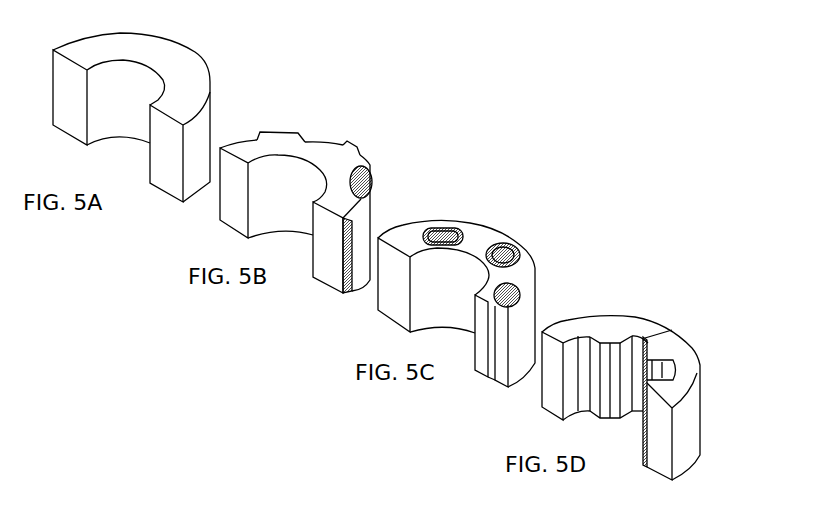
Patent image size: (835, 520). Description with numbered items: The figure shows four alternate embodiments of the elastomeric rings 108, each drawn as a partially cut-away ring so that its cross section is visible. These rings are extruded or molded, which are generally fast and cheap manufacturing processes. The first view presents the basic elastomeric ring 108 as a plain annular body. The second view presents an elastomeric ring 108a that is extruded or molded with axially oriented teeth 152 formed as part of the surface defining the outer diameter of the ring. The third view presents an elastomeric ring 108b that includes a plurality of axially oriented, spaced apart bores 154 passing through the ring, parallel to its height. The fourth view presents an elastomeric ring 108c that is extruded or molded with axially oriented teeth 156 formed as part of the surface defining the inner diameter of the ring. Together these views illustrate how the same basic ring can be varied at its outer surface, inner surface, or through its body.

In FIG. 5A, the elastomeric ring 108 is at (173, 43).
In FIG. 5B, the elastomeric ring 108a is at (337, 194).
In FIG. 5C, the elastomeric ring 108b is at (510, 279).
In FIG. 5D, the elastomeric ring 108c is at (664, 381).
In FIG. 5B, the axially oriented teeth 152 is at (285, 133).
In FIG. 5C, the axially oriented, spaced apart bores 154 is at (448, 230).
In FIG. 5D, the axially oriented teeth 156 is at (600, 358).